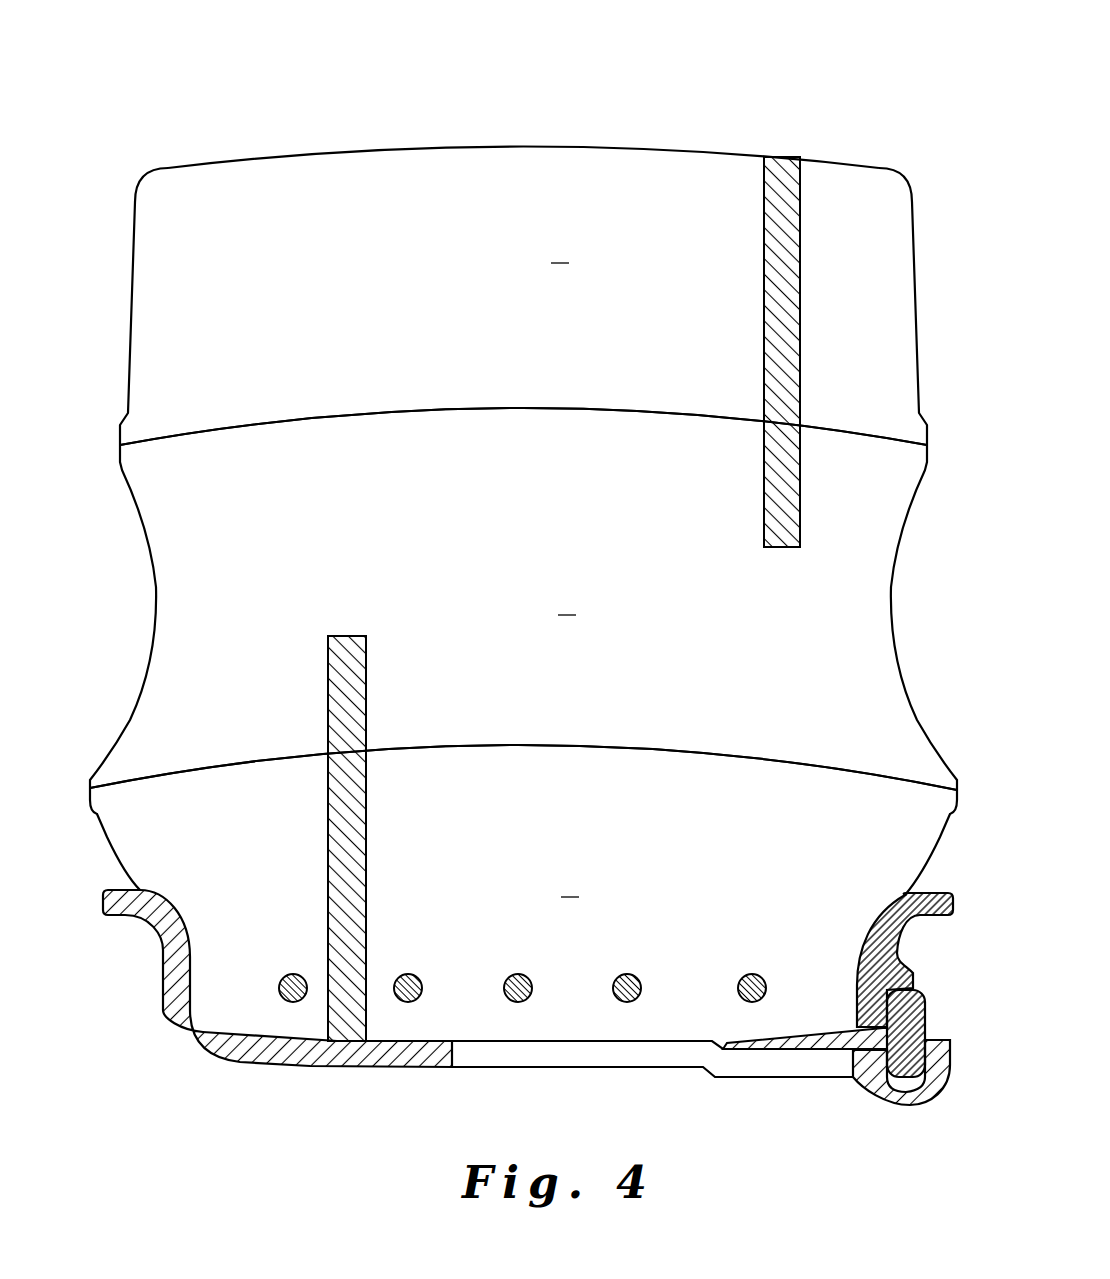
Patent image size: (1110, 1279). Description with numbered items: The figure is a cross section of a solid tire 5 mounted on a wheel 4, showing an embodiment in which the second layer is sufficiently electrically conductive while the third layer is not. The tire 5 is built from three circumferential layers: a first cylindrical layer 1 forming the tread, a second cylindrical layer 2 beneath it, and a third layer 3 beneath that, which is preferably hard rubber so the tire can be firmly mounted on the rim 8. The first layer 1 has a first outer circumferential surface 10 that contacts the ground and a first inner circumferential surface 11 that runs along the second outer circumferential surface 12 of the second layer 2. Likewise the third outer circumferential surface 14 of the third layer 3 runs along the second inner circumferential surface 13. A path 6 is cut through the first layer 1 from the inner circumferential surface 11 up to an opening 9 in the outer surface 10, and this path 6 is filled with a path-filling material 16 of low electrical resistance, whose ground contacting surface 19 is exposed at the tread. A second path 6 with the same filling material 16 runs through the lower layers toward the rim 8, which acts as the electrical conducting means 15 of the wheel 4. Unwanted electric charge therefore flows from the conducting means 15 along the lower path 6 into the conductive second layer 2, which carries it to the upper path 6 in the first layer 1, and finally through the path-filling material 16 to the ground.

The first cylindrical layer 1 is at (560, 248).
The second cylindrical layer 2 is at (567, 600).
The third layer 3 is at (570, 882).
The wheel 4 is at (138, 960).
The solid tire 5 is at (523, 449).
The path 6 is at (763, 245).
The rim 8 is at (312, 1050).
The opening 9 is at (805, 158).
The first outer circumferential surface 10 is at (705, 152).
The first inner circumferential surface 11 is at (548, 409).
The second outer circumferential surface 12 is at (587, 412).
The second inner circumferential surface 13 is at (735, 752).
The third outer circumferential surface 14 is at (695, 757).
The electrical conducting means 15 is at (393, 1048).
The path-filling material 16 is at (782, 342).
The ground contacting surface 19 is at (778, 157).